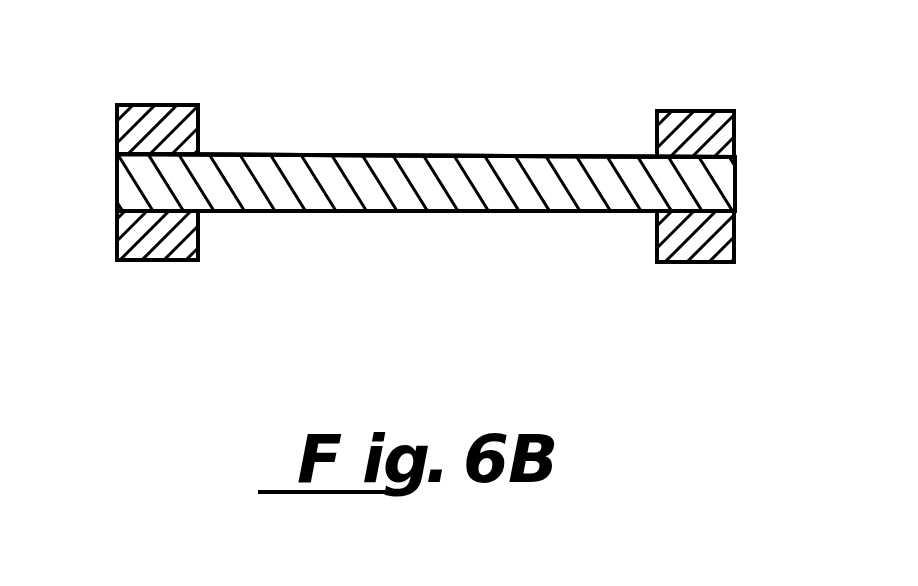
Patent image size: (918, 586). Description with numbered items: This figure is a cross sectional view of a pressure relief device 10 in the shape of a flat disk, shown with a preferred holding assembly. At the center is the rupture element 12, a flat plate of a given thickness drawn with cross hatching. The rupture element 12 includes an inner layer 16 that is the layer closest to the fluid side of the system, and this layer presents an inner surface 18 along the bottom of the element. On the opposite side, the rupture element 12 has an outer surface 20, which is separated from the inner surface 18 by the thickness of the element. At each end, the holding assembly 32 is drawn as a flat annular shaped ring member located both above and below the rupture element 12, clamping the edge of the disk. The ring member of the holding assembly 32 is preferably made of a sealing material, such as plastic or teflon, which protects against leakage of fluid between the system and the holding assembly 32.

The pressure relief device 10 is at (836, 185).
The rupture element 12 is at (487, 165).
The inner layer 16 is at (545, 213).
The inner surface 18 is at (336, 213).
The outer surface 20 is at (322, 155).
The holding assembly 32 is at (143, 120).